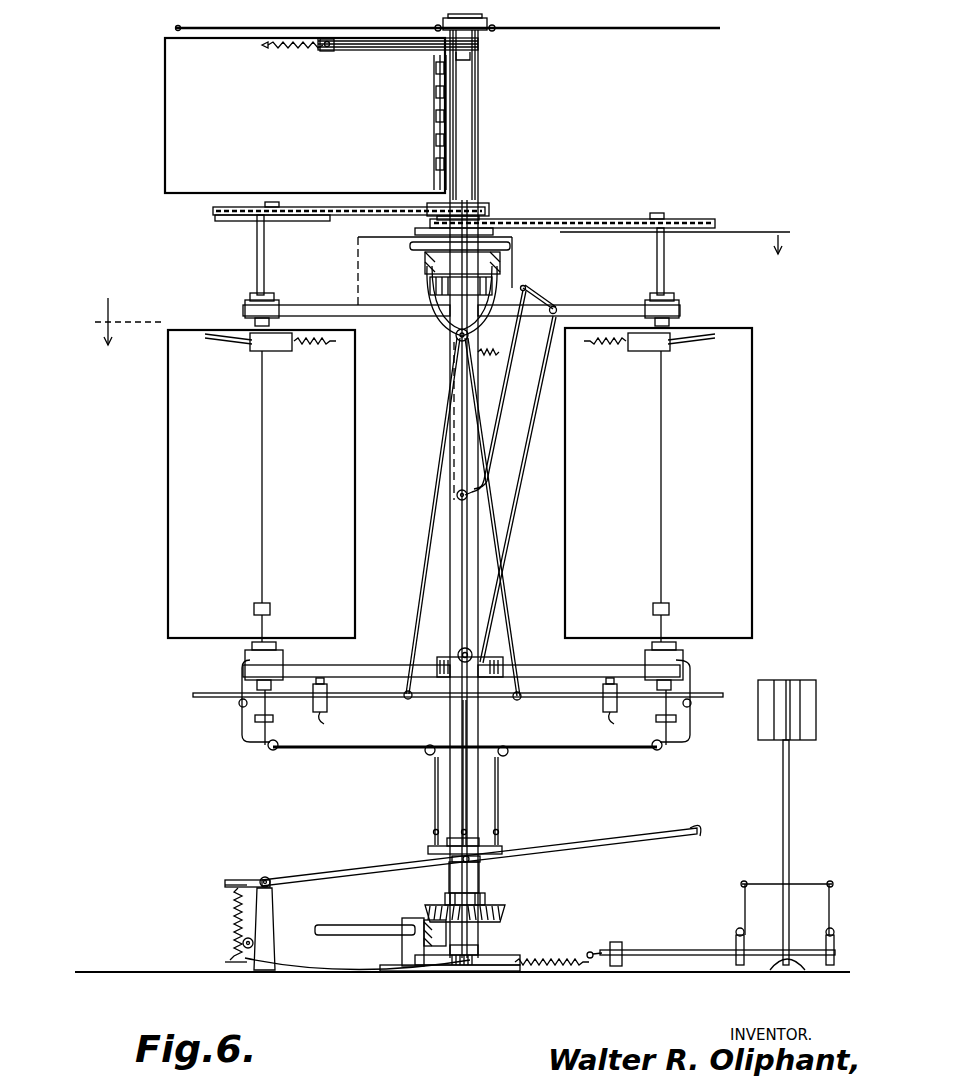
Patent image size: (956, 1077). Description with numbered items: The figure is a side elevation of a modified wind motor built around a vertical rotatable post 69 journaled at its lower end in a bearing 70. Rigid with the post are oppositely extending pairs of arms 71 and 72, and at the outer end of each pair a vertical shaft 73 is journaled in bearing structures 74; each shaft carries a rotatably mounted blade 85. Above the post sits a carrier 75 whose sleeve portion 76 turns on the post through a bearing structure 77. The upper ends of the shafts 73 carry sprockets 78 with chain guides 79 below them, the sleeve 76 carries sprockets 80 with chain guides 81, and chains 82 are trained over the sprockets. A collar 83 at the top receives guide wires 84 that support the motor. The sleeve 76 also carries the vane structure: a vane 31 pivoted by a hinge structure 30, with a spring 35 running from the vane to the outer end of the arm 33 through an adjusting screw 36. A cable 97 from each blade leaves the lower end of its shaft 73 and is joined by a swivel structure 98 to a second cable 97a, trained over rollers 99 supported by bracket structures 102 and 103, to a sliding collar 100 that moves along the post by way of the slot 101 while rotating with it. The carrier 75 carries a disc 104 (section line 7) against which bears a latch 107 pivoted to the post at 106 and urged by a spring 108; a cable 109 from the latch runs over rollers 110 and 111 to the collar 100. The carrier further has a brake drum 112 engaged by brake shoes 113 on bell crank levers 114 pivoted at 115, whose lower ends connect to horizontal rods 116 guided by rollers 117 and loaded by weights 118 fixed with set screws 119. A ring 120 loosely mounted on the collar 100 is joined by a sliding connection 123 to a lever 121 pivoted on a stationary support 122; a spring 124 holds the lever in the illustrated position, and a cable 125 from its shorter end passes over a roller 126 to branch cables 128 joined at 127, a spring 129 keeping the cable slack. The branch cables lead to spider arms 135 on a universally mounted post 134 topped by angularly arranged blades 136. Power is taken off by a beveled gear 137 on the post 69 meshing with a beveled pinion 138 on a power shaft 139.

The section line 7- 7 is at (442, 270).
The hinge structure 30 is at (434, 124).
The vane 31 is at (305, 115).
The arm 33 is at (378, 50).
The spring 35 is at (300, 48).
The adjusting screw 36 is at (326, 52).
The post 69 is at (470, 718).
The bearing 70 is at (480, 972).
The arms 71 is at (608, 304).
The arms 72 is at (380, 304).
The vertical shaft 73 is at (257, 268).
The bearing structures 74 is at (246, 306).
The carrier 75 is at (480, 100).
The sleeve portion 76 is at (472, 58).
The bearing structure 77 is at (492, 284).
The sprockets 78 is at (213, 211).
The chain guides 79 is at (218, 222).
The sprockets 80 is at (432, 228).
The chain guides 81 is at (494, 229).
The chains 82 is at (368, 214).
The collar 83 is at (480, 34).
The guide wires 84 is at (244, 32).
The blade 85 is at (460, 483).
The cable 97 is at (664, 706).
The second cable 97a is at (576, 752).
The swivel structure 98 is at (660, 722).
The rollers 99 is at (508, 756).
The sliding collar 100 is at (496, 828).
The slot 101 is at (480, 880).
The bracket structures 102 is at (242, 740).
The bracket structure 103 is at (500, 780).
The disc 104 is at (420, 250).
The pivot 106 is at (457, 497).
The latch 107 is at (504, 392).
The spring 108 is at (492, 350).
The cable 109 is at (514, 468).
The roller 110 is at (556, 304).
The roller 111 is at (478, 638).
The brake drum 112 is at (438, 278).
The brake shoes 113 is at (500, 258).
The bell crank levers 114 is at (425, 582).
The pivot 115 is at (456, 338).
The rods 116 is at (396, 698).
The rollers 117 is at (240, 706).
The weights 118 is at (320, 712).
The set screws 119 is at (274, 655).
The ring 120 is at (430, 852).
The lever 121 is at (582, 850).
The stationary support 122 is at (272, 888).
The sliding connection 123 is at (455, 862).
The spring 124 is at (236, 905).
The cable 125 is at (350, 970).
The roller 126 is at (268, 930).
The connection 127 is at (592, 952).
The branch cables 128 is at (690, 946).
The spring 129 is at (560, 966).
The post 134 is at (790, 822).
The spider arms 135 is at (808, 880).
The blades 136 is at (772, 682).
The beveled gear 137 is at (505, 920).
The beveled pinion 138 is at (432, 966).
The power shaft 139 is at (360, 925).